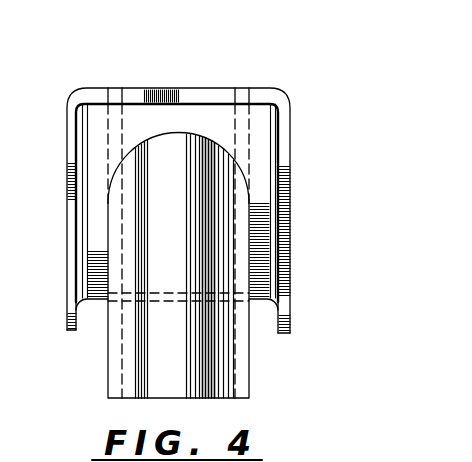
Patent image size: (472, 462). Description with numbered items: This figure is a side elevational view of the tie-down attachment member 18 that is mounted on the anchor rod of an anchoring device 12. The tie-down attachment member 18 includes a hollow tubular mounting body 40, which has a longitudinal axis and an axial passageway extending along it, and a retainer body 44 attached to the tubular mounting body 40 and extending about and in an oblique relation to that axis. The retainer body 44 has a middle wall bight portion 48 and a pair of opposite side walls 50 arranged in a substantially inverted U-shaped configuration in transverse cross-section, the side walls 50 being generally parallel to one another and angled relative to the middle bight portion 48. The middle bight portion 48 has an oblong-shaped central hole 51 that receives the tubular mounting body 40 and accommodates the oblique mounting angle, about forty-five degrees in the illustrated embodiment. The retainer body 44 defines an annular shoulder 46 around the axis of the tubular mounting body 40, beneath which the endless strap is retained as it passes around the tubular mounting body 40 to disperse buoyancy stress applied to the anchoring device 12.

The anchoring device 12 is at (80, 73).
The tie-down attachment member 18 is at (284, 78).
The hollow tubular mounting body 40 is at (262, 370).
The retainer body 44 is at (303, 218).
The annular shoulder 46 is at (182, 124).
The middle wall bight portion 48 is at (142, 88).
The side walls 50 is at (73, 302).
The oblong-shaped central hole 51 is at (160, 137).